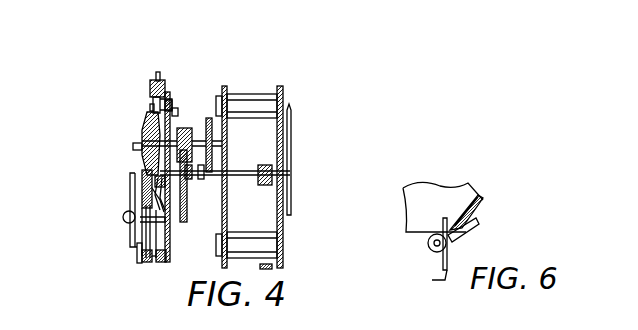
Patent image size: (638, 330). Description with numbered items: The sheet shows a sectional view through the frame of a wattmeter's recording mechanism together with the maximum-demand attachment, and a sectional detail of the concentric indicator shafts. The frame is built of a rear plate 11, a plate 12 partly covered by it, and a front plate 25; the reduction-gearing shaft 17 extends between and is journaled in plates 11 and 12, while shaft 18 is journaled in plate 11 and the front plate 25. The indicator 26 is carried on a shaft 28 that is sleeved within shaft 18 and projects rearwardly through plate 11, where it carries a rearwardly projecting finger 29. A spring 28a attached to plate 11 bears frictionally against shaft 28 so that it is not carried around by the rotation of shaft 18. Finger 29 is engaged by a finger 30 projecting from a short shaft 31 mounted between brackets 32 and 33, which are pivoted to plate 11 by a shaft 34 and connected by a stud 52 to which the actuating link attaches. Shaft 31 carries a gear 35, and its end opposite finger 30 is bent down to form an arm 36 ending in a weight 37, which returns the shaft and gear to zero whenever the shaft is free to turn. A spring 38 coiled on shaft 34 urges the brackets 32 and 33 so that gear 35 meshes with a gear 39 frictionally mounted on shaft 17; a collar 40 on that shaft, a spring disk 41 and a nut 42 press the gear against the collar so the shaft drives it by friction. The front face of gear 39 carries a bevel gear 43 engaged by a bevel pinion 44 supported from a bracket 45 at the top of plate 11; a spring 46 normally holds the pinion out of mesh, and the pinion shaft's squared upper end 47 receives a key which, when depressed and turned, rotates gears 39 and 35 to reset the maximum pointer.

In FIG. 4, the plate 11 is at (171, 229).
In FIG. 6, the plate 11 is at (443, 207).
In FIG. 4, the plate 12 is at (228, 166).
In FIG. 4, the shaft 17 is at (177, 128).
In FIG. 4, the shaft 18 is at (229, 178).
In FIG. 6, the shaft 18 is at (476, 231).
In FIG. 4, the front plate 25 is at (283, 97).
In FIG. 4, the indicator 26 is at (292, 141).
In FIG. 4, the shaft 28 is at (274, 176).
In FIG. 6, the shaft 28 is at (428, 247).
In FIG. 6, the spring 28a is at (446, 220).
In FIG. 4, the finger 29 is at (163, 194).
In FIG. 6, the finger 29 is at (432, 281).
In FIG. 4, the finger 30 is at (162, 180).
In FIG. 4, the shaft 31 is at (130, 172).
In FIG. 4, the bracket 32 is at (141, 237).
In FIG. 4, the bracket 33 is at (164, 228).
In FIG. 4, the shaft 34 is at (138, 258).
In FIG. 4, the gear 35 is at (148, 201).
In FIG. 4, the arm 36 is at (128, 190).
In FIG. 4, the weight 37 is at (126, 222).
In FIG. 4, the spring 38 is at (152, 263).
In FIG. 4, the gear 39 is at (148, 110).
In FIG. 4, the collar 40 is at (178, 110).
In FIG. 4, the spring disk 41 is at (141, 131).
In FIG. 4, the nut 42 is at (132, 148).
In FIG. 4, the bevel gear 43 is at (150, 108).
In FIG. 4, the bevel pinion 44 is at (168, 100).
In FIG. 4, the bracket 45 is at (152, 80).
In FIG. 4, the spring 46 is at (166, 92).
In FIG. 4, the squared end 47 is at (163, 68).
In FIG. 4, the stud 52 is at (150, 220).